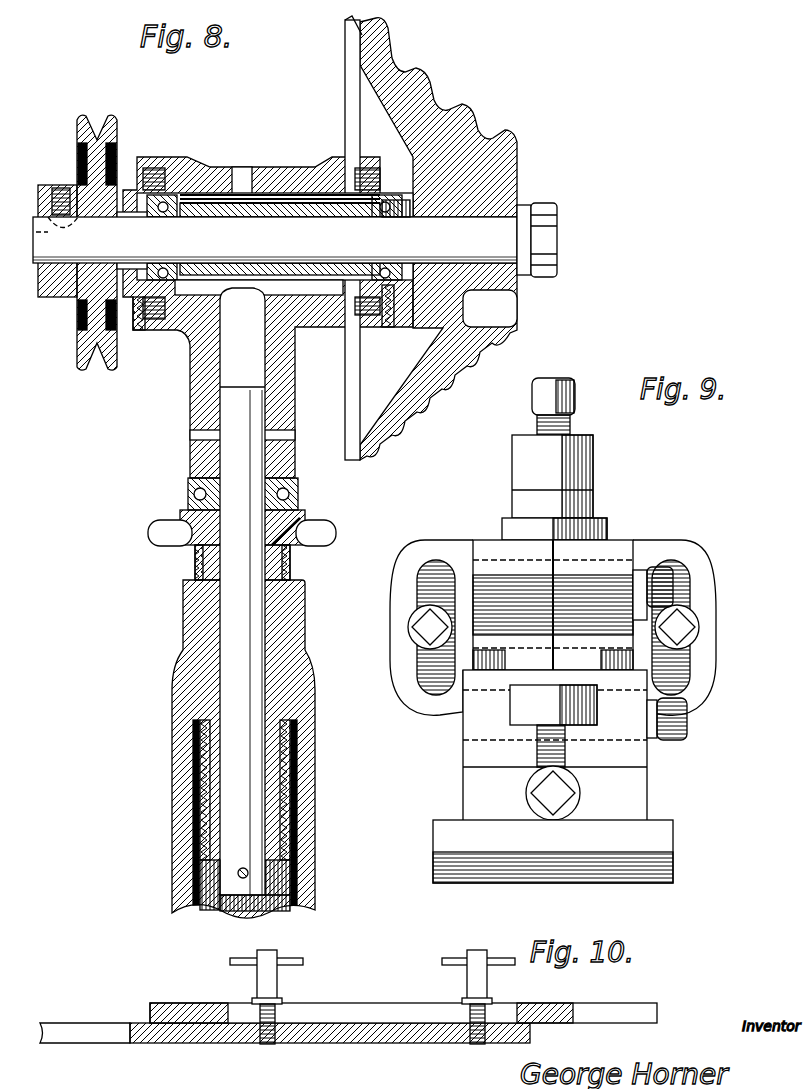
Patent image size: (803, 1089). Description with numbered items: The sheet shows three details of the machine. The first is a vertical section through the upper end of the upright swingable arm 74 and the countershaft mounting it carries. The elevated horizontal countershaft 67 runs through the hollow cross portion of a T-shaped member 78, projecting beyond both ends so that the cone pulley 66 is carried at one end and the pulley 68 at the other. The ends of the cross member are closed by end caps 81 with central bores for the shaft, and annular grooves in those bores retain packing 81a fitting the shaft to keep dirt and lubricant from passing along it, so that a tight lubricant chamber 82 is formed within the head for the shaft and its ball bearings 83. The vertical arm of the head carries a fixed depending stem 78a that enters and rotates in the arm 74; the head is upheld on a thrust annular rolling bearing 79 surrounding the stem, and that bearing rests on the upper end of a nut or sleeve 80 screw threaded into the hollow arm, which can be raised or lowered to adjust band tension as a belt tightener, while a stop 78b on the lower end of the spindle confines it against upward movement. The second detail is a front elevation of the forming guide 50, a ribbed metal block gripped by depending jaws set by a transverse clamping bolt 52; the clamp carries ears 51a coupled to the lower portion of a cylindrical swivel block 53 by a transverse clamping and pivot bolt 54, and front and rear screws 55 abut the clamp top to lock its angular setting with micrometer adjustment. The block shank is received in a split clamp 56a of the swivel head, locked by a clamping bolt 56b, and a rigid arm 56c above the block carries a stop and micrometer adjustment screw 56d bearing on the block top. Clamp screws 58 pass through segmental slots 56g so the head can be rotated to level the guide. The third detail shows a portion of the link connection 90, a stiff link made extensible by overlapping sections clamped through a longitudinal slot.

In FIG. 9, the forming guide 50 is at (672, 873).
In FIG. 9, the ears 51a is at (470, 749).
In FIG. 9, the transverse clamping bolt 52 is at (545, 794).
In FIG. 9, the swivel block 53 is at (600, 520).
In FIG. 9, the clamping and pivot bolt 54 is at (690, 728).
In FIG. 9, the vertically adjustable screw 55 is at (545, 756).
In FIG. 9, the split clamp 56a is at (505, 556).
In FIG. 9, the clamping bolt 56b is at (660, 583).
In FIG. 9, the rigid arm 56c is at (590, 443).
In FIG. 9, the stop and micrometer adjustment screw 56d is at (574, 388).
In FIG. 9, the segmental slots 56g is at (432, 566).
In FIG. 9, the clamp screws 58 is at (425, 626).
In FIG. 8, the cone pulley 66 is at (430, 80).
In FIG. 8, the countershaft 67 is at (295, 240).
In FIG. 8, the pulley 68 is at (97, 129).
In FIG. 8, the upright swingable arm 74 is at (178, 801).
In FIG. 8, the T-shaped member 78 is at (276, 186).
In FIG. 8, the depending stem 78a is at (237, 649).
In FIG. 8, the stop 78b is at (210, 879).
In FIG. 8, the thrust annular rolling bearing 79 is at (190, 497).
In FIG. 8, the adjustable nut or sleeve 80 is at (190, 536).
In FIG. 8, the end caps 81 is at (138, 318).
In FIG. 8, the packing 81a is at (393, 206).
In FIG. 8, the lubricant chamber 82 is at (198, 284).
In FIG. 8, the ball bearings 83 is at (168, 190).
In FIG. 10, the link connection 90 is at (352, 1025).